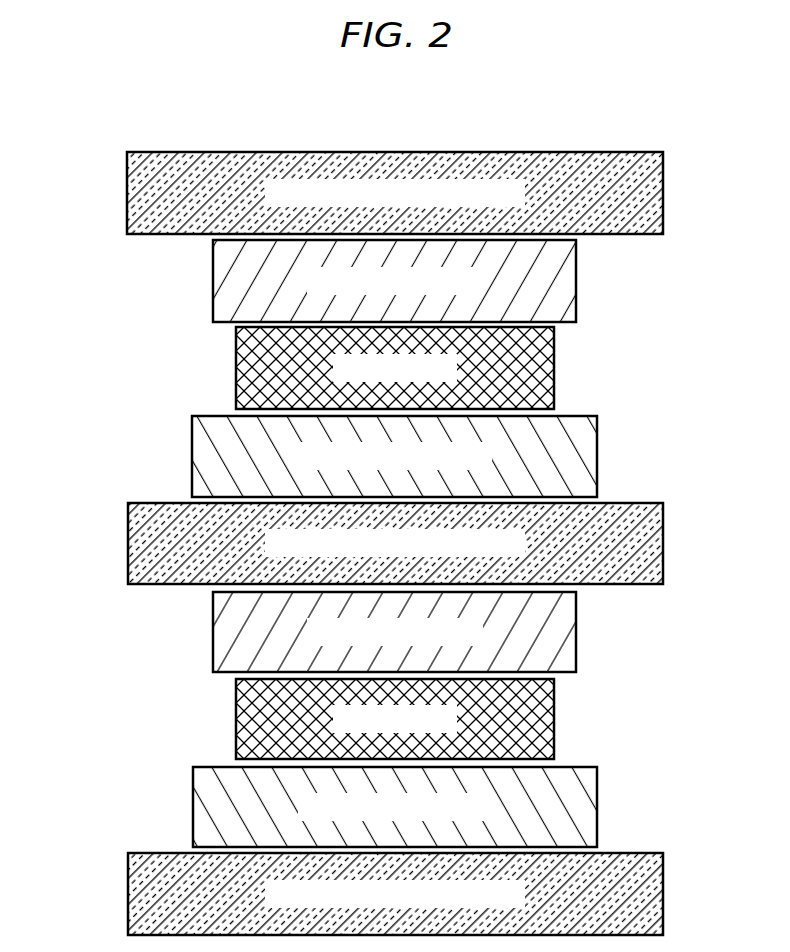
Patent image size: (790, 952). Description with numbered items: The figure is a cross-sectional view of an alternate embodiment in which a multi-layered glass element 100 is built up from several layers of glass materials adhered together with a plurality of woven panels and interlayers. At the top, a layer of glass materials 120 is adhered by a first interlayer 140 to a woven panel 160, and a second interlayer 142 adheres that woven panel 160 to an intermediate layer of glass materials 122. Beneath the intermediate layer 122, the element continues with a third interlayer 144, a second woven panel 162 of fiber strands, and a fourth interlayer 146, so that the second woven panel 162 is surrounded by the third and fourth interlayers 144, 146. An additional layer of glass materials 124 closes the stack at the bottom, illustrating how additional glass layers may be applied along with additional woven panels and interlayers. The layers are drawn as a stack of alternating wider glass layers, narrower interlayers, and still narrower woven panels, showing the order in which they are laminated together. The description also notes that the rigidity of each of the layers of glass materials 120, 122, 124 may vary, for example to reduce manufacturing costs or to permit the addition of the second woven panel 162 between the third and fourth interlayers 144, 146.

The multi-layered glass element 100 is at (410, 116).
The layer of glass materials 120 is at (127, 190).
The layer of glass materials 122 is at (128, 545).
The layer of glass materials 124 is at (128, 896).
The first interlayer 140 is at (213, 280).
The second interlayer 142 is at (192, 455).
The third interlayer 144 is at (213, 632).
The fourth interlayer 146 is at (193, 807).
The woven panel 160 is at (236, 367).
The second woven panel 162 is at (236, 720).